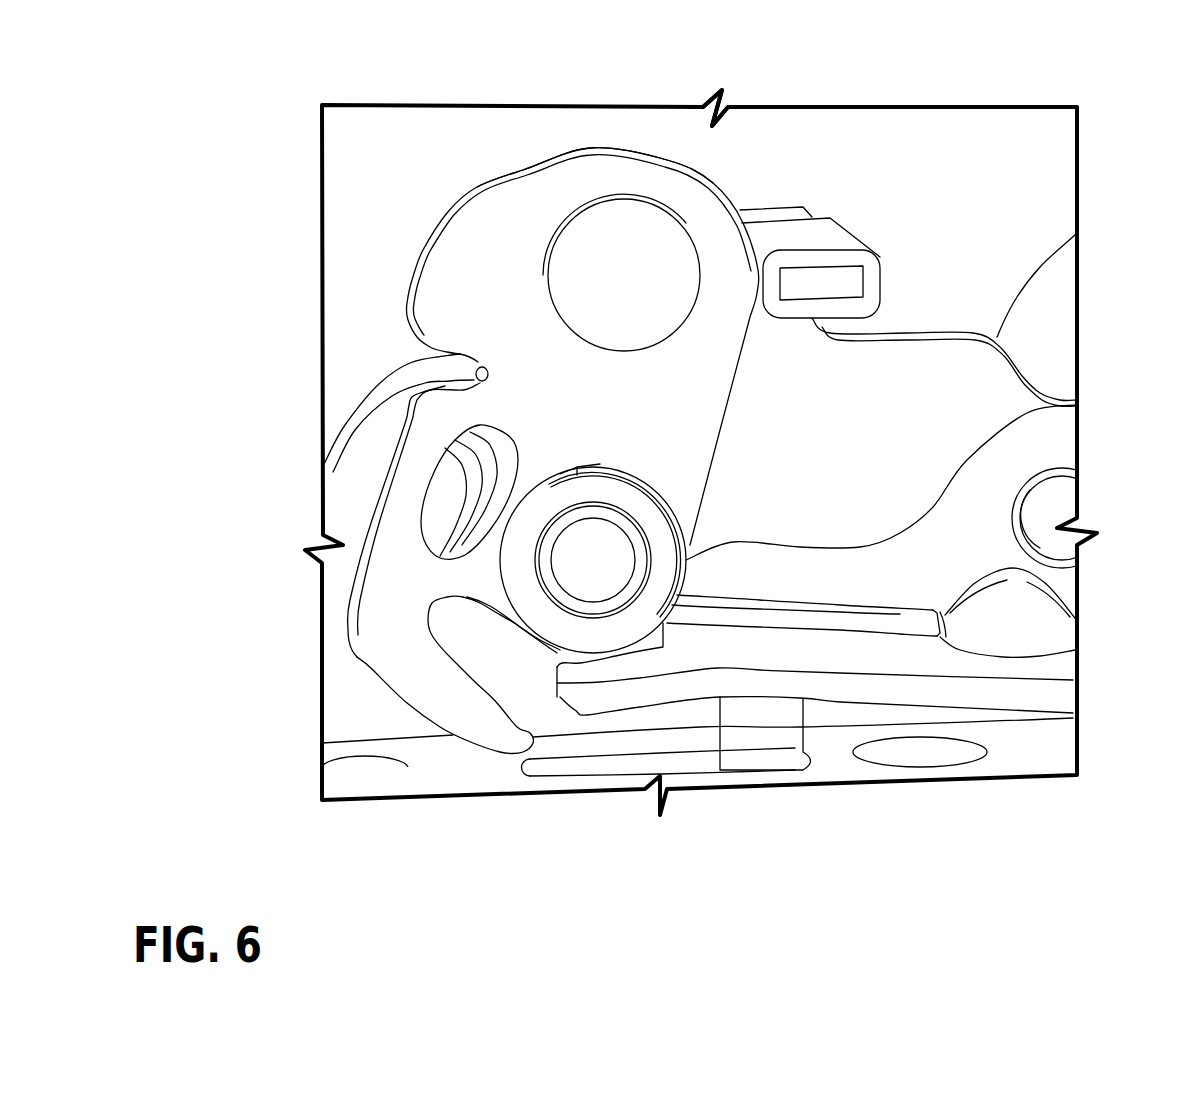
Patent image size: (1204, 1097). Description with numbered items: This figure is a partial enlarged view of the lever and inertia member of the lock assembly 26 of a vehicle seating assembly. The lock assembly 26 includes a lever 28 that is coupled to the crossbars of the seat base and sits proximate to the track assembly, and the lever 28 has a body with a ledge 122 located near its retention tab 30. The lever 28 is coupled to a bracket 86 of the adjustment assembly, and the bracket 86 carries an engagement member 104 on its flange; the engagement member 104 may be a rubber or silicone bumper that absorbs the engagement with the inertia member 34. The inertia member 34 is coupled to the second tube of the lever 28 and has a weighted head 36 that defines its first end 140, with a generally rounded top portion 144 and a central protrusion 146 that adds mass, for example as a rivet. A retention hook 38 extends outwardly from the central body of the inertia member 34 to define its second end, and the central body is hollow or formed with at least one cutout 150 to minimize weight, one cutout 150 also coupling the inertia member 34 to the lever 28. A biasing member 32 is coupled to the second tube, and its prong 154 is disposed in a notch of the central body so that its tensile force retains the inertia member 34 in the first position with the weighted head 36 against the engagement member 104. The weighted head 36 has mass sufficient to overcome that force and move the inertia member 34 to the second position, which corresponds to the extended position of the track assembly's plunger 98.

The lock assembly 26 is at (1122, 150).
The lever 28 is at (975, 520).
The retention tab 30 is at (580, 695).
The biasing member 32 is at (460, 355).
The inertia member 34 is at (452, 288).
The weighted head 36 is at (688, 195).
The retention hook 38 is at (455, 733).
The bracket 86 is at (1077, 235).
The plunger 98 is at (755, 747).
The engagement member 104 is at (837, 237).
The ledge 122 is at (843, 688).
The first end 140 is at (570, 152).
The rounded top portion 144 is at (587, 153).
The central protrusion 146 is at (655, 257).
The cutout 150 is at (455, 555).
The prong 154 is at (440, 380).